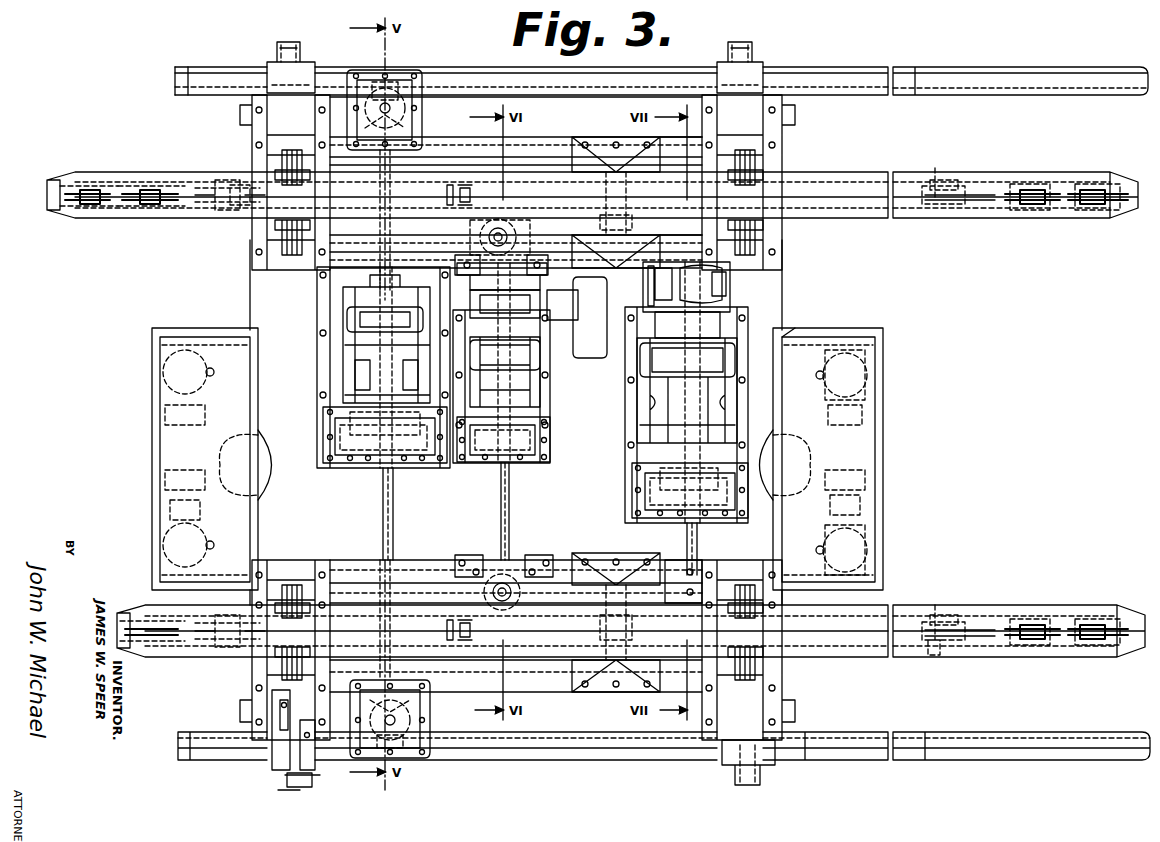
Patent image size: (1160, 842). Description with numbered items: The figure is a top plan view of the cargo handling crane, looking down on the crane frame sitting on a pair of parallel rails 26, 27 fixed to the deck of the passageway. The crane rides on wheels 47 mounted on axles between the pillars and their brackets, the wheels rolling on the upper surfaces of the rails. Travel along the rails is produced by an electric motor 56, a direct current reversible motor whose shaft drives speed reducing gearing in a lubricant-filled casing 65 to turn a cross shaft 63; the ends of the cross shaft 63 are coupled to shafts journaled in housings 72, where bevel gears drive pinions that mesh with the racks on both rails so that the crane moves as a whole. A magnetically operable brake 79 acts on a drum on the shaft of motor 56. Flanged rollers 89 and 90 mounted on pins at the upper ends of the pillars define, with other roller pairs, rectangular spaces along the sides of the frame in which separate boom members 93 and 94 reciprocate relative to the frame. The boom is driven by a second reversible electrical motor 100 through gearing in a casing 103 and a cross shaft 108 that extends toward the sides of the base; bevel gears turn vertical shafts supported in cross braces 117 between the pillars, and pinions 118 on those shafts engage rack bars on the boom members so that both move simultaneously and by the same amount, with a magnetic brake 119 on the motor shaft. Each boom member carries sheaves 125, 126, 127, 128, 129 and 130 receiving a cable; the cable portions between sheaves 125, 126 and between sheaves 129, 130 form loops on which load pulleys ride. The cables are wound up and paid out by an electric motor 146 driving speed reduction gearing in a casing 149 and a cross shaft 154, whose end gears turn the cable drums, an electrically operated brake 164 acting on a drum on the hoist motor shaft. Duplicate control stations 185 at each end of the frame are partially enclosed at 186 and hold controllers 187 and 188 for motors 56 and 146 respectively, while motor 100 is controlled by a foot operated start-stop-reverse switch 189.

The rail 26 is at (993, 66).
The rail 27 is at (1043, 732).
The wheel 47 is at (772, 752).
The electric motor 56 is at (369, 367).
The cross shaft 63 is at (383, 516).
The casing 65 is at (343, 465).
The housing 72 is at (412, 710).
The magnetically operable brake 79 is at (375, 322).
The roller 89 is at (282, 178).
The roller 90 is at (282, 225).
The boom member 93 is at (1010, 222).
The boom member 94 is at (955, 605).
The electrical motor 100 is at (530, 363).
The casing 103 is at (540, 440).
The cross shaft 108 is at (501, 497).
The cross brace 117 is at (530, 565).
The pinion 118 is at (488, 565).
The magnetic brake 119 is at (520, 305).
The sheave 125 is at (100, 202).
The sheave 126 is at (137, 202).
The sheave 127 is at (200, 212).
The sheave 128 is at (935, 175).
The sheave 129 is at (1040, 185).
The sheave 130 is at (1082, 185).
The electric motor 146 is at (682, 392).
The casing 149 is at (650, 485).
The cross shaft 154 is at (687, 545).
The electrically operated brake 164 is at (712, 290).
The control station 185 is at (861, 450).
The enclosure 186 is at (825, 332).
The controller 187 is at (868, 376).
The controller 188 is at (860, 553).
The foot operated switch 189 is at (868, 491).